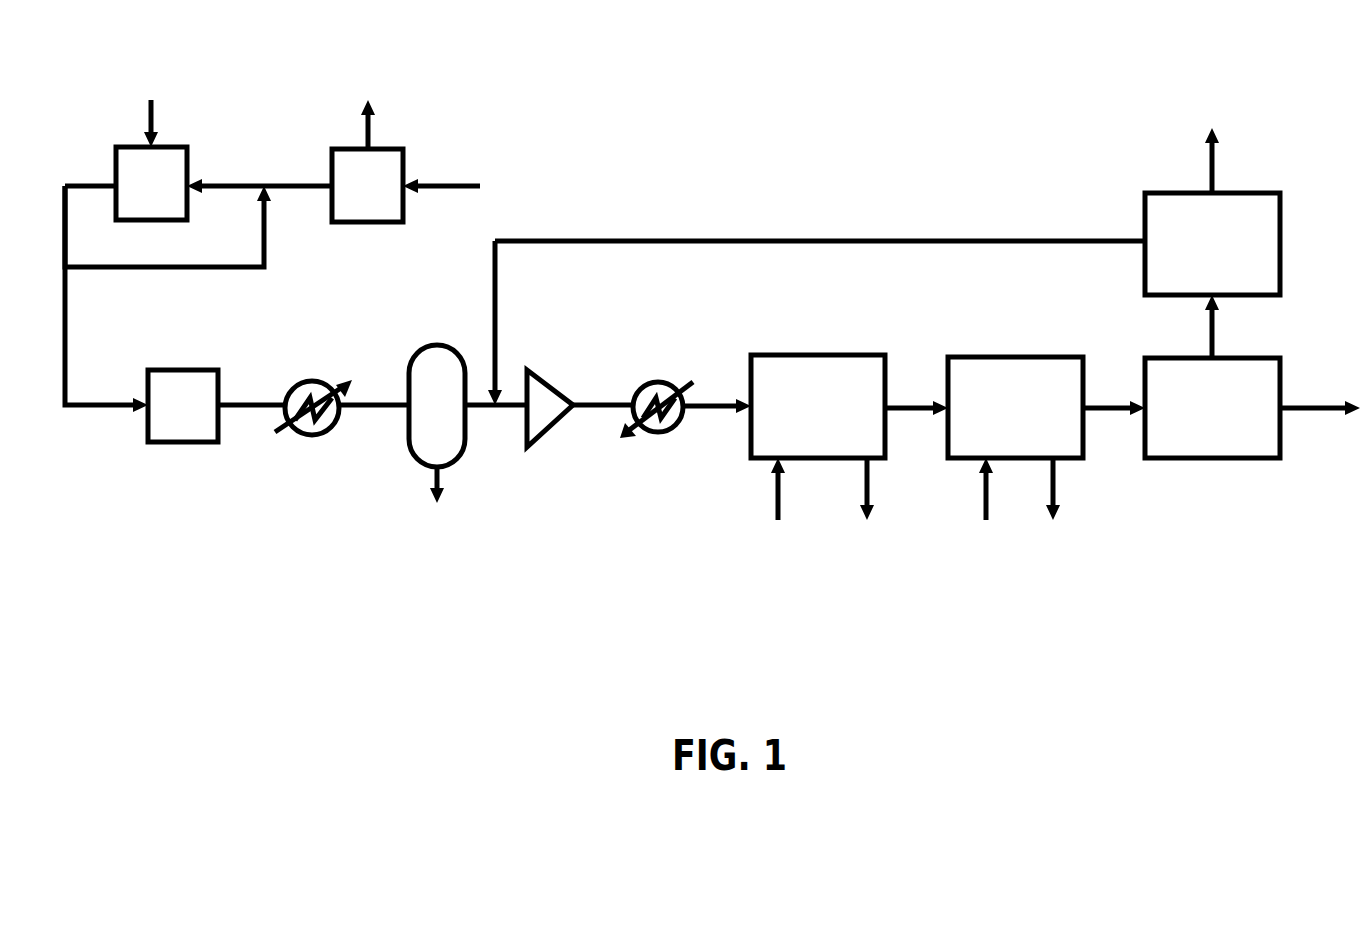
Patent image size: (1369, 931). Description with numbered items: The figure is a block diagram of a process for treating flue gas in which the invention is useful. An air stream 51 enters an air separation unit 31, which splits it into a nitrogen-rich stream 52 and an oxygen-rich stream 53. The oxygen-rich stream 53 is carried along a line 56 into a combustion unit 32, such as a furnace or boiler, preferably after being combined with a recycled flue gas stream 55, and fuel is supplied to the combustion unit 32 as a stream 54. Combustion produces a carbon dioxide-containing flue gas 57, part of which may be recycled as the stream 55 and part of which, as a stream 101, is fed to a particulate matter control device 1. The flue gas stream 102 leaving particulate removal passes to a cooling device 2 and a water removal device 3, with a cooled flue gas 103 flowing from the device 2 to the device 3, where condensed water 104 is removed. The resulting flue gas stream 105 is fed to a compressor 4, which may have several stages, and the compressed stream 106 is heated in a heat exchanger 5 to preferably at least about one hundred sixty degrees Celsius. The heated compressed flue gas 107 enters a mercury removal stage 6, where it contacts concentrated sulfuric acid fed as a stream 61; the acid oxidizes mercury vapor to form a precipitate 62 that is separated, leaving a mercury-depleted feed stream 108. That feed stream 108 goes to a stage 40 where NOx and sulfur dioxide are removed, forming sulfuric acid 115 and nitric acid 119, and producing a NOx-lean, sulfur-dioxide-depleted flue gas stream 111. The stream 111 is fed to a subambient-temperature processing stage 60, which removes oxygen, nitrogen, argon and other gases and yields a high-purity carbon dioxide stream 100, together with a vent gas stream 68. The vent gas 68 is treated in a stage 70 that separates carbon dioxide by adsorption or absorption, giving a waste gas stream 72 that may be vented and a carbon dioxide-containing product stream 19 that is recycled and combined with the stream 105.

The particulate matter control device 1 is at (183, 389).
The cooling device 2 is at (313, 385).
The water removal device 3 is at (433, 412).
The compressor 4 is at (550, 392).
The heat exchanger 5 is at (656, 388).
The mercury removal stage 6 is at (818, 406).
The carbon dioxide-containing product stream 19 is at (820, 224).
The air separation unit 31 is at (367, 185).
The combustion unit 32 is at (151, 183).
The NOx and SO2 removal stage 40 is at (1015, 407).
The air stream 51 is at (441, 175).
The nitrogen-rich stream 52 is at (368, 113).
The oxygen-rich stream 53 is at (298, 172).
The fuel stream 54 is at (152, 112).
The recycled flue gas stream 55 is at (168, 226).
The stream to unit 32 56 is at (225, 175).
The carbon dioxide-containing flue gas 57 is at (90, 172).
The subambient-temperature processing stage 60 is at (1212, 408).
The sulfuric acid stream 61 is at (775, 508).
The HgSO4 precipitate 62 is at (863, 508).
The vent gas stream 68 is at (1230, 326).
The carbon dioxide separation stage 70 is at (1212, 244).
The waste gas stream 72 is at (1201, 143).
The high-purity carbon dioxide stream 100 is at (1320, 433).
The flue gas stream 101 is at (106, 299).
The flue gas stream following particulate removal 102 is at (251, 390).
The cooled flue gas 103 is at (374, 390).
The condensed water 104 is at (437, 498).
The flue gas stream 105 is at (496, 339).
The compressed stream 106 is at (603, 390).
The compressed flue gas 107 is at (717, 394).
The feed stream 108 is at (916, 395).
The NOx-lean SO2-depleted flue gas stream 111 is at (1114, 393).
The sulfuric acid 115 is at (982, 507).
The nitric acid 119 is at (1053, 507).